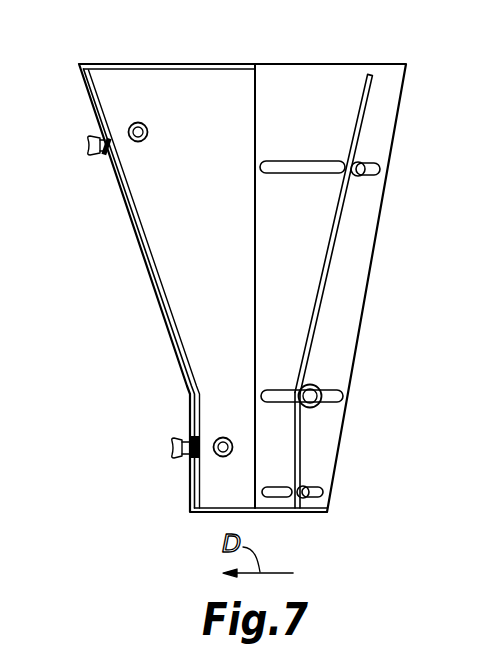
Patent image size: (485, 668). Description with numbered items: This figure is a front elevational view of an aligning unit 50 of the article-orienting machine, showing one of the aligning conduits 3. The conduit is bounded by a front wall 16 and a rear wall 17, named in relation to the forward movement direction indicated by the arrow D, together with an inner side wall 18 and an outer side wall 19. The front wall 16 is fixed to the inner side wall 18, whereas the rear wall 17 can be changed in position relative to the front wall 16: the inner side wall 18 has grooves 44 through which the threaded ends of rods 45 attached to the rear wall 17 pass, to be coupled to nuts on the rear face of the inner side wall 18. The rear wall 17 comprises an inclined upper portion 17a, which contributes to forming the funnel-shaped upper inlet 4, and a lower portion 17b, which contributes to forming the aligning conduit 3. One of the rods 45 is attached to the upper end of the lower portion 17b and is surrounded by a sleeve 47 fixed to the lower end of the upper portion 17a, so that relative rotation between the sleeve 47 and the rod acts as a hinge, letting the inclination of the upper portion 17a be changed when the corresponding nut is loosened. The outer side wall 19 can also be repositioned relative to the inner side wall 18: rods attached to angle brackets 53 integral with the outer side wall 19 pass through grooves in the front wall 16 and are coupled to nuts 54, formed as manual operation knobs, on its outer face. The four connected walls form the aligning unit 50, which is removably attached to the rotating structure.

The aligning conduit 3 is at (268, 450).
The funnel-shaped upper inlet 4 is at (275, 96).
The front wall 16 is at (143, 252).
The rear wall 17 is at (370, 291).
The upper portion 17a is at (363, 115).
The lower portion 17b is at (298, 450).
The inner side wall 18 is at (305, 77).
The outer side wall 19 is at (191, 78).
The grooves 44 is at (311, 163).
The rods 45 is at (359, 175).
The sleeve 47 is at (318, 386).
The aligning unit 50 is at (130, 317).
The angle brackets 53 is at (112, 158).
The nuts 54 is at (88, 147).